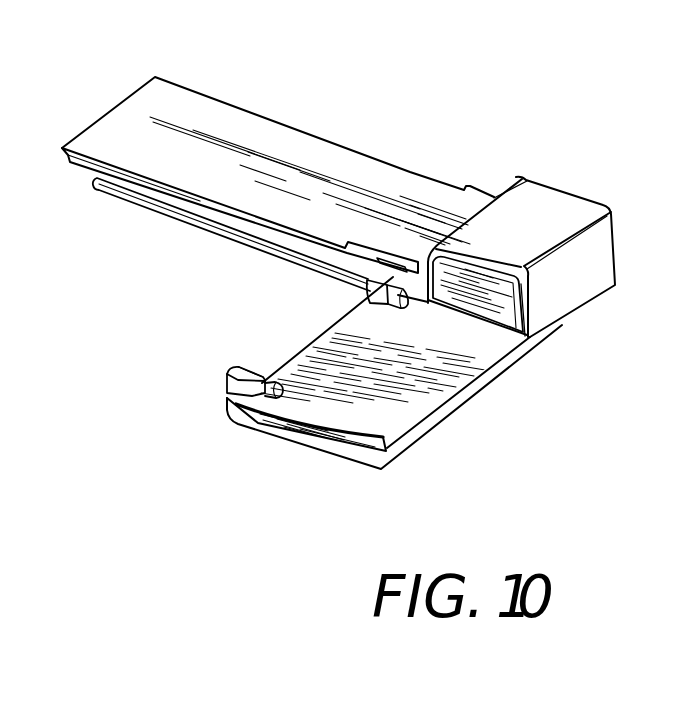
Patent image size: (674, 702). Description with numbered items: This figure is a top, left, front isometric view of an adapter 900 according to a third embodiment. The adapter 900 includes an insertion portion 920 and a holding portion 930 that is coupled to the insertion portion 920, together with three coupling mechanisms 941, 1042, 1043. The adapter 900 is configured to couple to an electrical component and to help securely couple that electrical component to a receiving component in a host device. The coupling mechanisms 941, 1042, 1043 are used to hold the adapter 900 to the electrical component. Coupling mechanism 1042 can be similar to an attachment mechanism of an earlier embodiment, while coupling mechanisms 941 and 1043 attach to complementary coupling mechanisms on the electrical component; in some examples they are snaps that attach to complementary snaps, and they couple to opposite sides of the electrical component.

The adapter 900 is at (656, 77).
The insertion portion 920 is at (155, 105).
The holding portion 930 is at (395, 418).
The coupling mechanism 941 is at (210, 368).
The coupling mechanism 1042 is at (115, 192).
The coupling mechanism 1043 is at (372, 298).